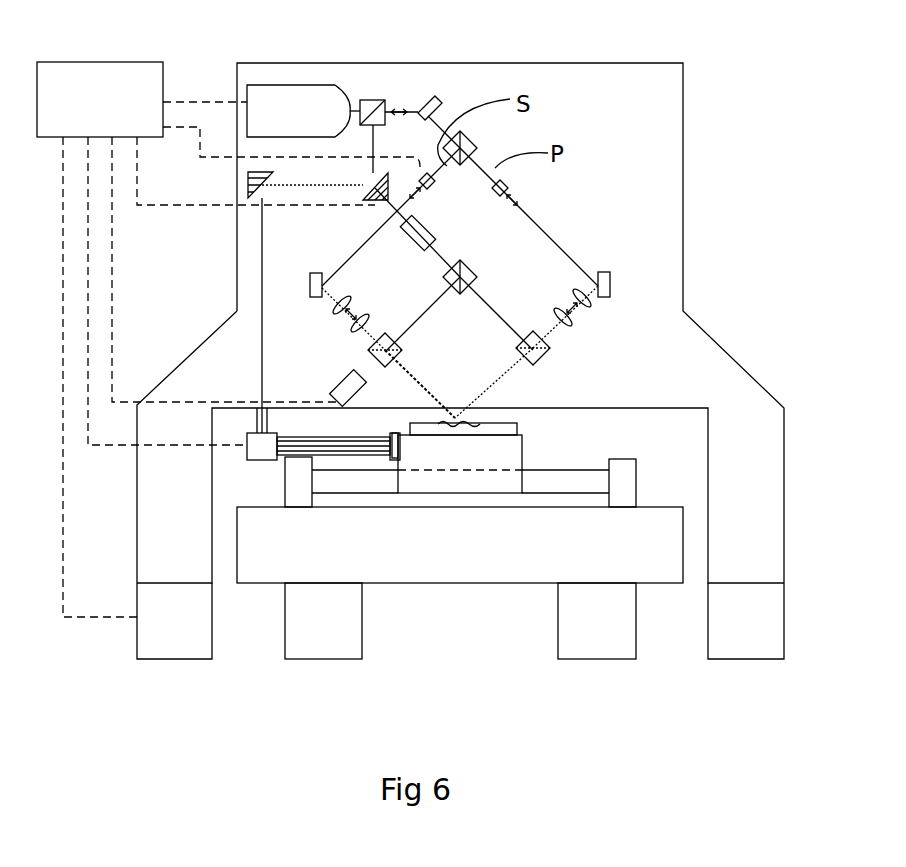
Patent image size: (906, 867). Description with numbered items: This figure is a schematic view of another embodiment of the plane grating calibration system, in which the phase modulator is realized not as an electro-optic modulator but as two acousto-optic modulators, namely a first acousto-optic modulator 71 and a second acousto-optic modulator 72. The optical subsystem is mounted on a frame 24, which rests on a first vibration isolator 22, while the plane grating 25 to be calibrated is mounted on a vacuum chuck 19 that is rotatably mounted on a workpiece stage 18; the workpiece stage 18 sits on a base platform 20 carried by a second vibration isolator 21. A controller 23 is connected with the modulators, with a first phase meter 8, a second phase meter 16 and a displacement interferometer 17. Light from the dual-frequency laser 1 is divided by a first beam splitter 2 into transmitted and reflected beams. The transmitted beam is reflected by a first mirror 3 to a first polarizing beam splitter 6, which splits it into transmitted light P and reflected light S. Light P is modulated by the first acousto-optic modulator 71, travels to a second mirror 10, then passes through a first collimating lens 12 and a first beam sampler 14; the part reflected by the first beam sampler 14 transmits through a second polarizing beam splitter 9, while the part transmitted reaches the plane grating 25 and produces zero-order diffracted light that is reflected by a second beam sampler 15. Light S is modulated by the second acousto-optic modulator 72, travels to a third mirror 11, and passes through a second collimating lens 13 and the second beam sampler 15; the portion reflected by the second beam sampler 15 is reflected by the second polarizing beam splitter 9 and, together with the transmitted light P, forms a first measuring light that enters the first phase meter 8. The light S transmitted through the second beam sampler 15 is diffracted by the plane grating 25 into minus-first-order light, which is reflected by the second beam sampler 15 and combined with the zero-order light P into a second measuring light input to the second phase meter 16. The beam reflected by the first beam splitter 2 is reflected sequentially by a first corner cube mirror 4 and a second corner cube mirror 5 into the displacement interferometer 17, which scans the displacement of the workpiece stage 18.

The dual-frequency laser 1 is at (275, 100).
The first beam splitter 2 is at (373, 101).
The first mirror 3 is at (446, 106).
The first corner cube mirror 4 is at (372, 198).
The second corner cube mirror 5 is at (248, 178).
The first polarizing beam splitter 6 is at (478, 145).
The first acousto-optic modulator 71 is at (512, 190).
The second acousto-optic modulator 72 is at (433, 188).
The first phase meter 8 is at (436, 237).
The second polarizing beam splitter 9 is at (480, 278).
The second mirror 10 is at (614, 287).
The third mirror 11 is at (310, 283).
The first collimating lens 12 is at (592, 318).
The second collimating lens 13 is at (335, 318).
The first beam sampler 14 is at (515, 346).
The second beam sampler 15 is at (405, 352).
The second phase meter 16 is at (338, 382).
The displacement interferometer 17 is at (252, 455).
The workpiece stage 18 is at (515, 443).
The vacuum chuck 19 is at (515, 424).
The base platform 20 is at (415, 567).
The second vibration isolator 21 is at (580, 620).
The first vibration isolator 22 is at (180, 643).
The controller 23 is at (70, 78).
The frame 24 is at (587, 73).
The plane grating 25 is at (480, 418).